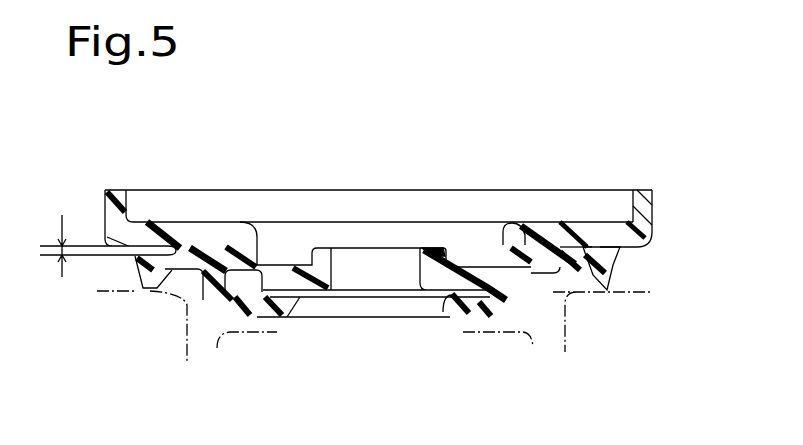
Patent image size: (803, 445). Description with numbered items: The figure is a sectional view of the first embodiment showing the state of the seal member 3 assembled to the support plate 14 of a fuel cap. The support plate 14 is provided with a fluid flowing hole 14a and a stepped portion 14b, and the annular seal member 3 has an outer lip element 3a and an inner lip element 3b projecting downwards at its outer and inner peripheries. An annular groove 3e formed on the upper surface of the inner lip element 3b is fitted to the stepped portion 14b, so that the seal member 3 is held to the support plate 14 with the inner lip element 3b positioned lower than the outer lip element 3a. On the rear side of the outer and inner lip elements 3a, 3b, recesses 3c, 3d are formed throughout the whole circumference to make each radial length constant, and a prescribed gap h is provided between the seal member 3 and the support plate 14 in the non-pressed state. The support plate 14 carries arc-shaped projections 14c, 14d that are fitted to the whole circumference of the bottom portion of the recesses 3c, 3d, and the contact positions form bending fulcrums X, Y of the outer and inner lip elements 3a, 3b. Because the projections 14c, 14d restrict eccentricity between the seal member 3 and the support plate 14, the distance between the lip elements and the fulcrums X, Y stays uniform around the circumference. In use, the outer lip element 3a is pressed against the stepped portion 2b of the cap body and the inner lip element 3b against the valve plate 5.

The support plate 14 is at (638, 238).
The fluid flowing hole 14a is at (343, 271).
The stepped portion 14b is at (233, 235).
The arc-shaped projection 14c is at (177, 245).
The arc-shaped projection 14d is at (267, 290).
The seal member 3 is at (205, 293).
The outer lip element 3a is at (603, 293).
The inner lip element 3b is at (463, 303).
The recess 3c is at (615, 237).
The recess 3d is at (445, 297).
The annular groove 3e is at (505, 260).
The valve plate 5 is at (265, 340).
The stepped portion 2b is at (147, 298).
The bending fulcrum X is at (587, 248).
The bending fulcrum Y is at (493, 263).
The gap h is at (327, 352).